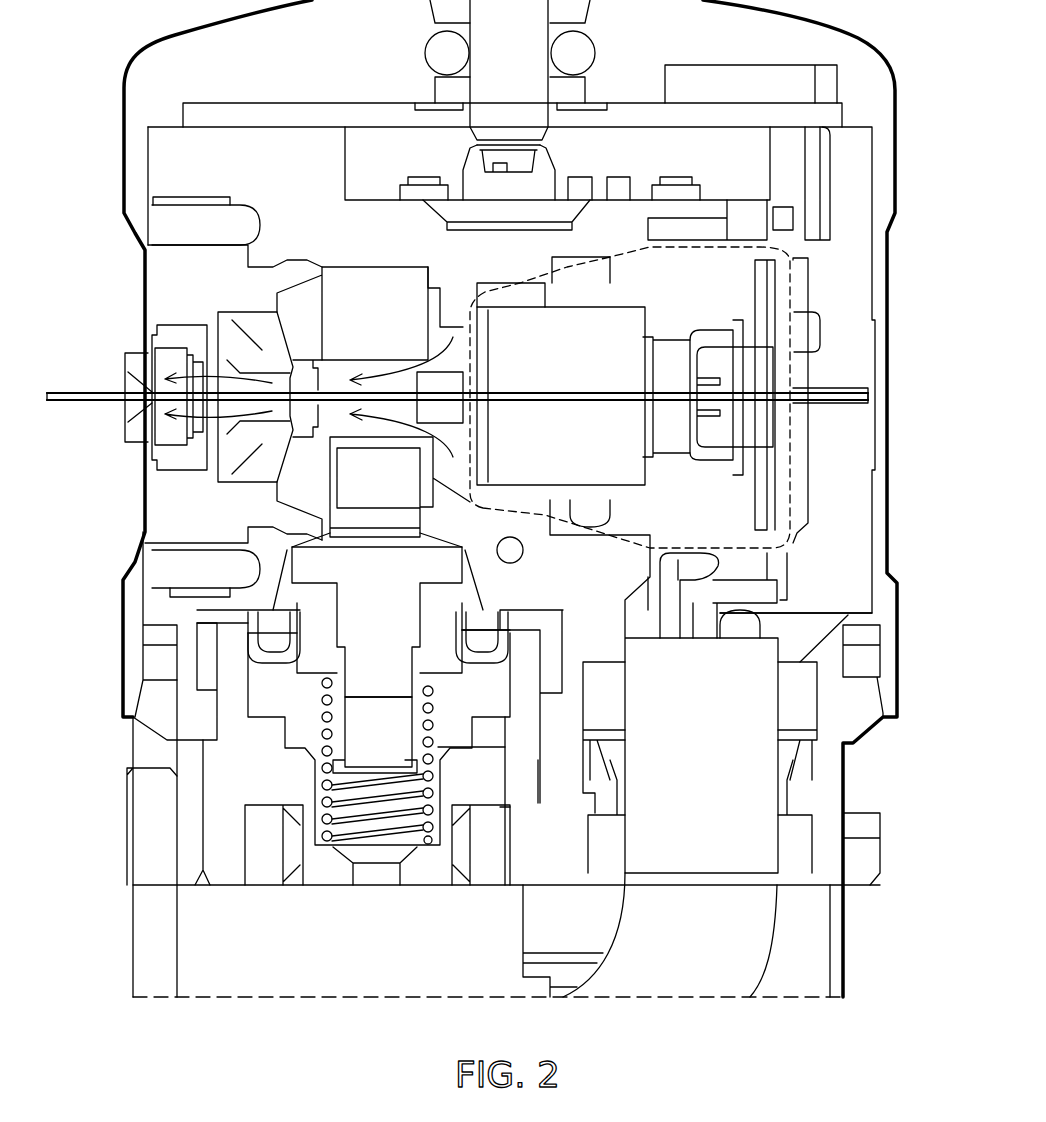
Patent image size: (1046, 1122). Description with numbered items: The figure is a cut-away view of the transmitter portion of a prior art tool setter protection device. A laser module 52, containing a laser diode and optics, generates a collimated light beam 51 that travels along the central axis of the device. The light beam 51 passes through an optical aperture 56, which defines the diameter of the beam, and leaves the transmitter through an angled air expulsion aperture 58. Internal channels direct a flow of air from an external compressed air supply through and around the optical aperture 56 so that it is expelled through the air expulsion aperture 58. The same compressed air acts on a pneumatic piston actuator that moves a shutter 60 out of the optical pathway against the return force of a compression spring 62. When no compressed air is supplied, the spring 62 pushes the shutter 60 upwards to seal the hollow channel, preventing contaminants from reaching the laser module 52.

The collimated light beam 51 is at (120, 386).
The laser module 52 is at (793, 290).
The optical aperture 56 is at (302, 386).
The angled air expulsion aperture 58 is at (106, 414).
The shutter 60 is at (396, 601).
The compression spring 62 is at (403, 800).